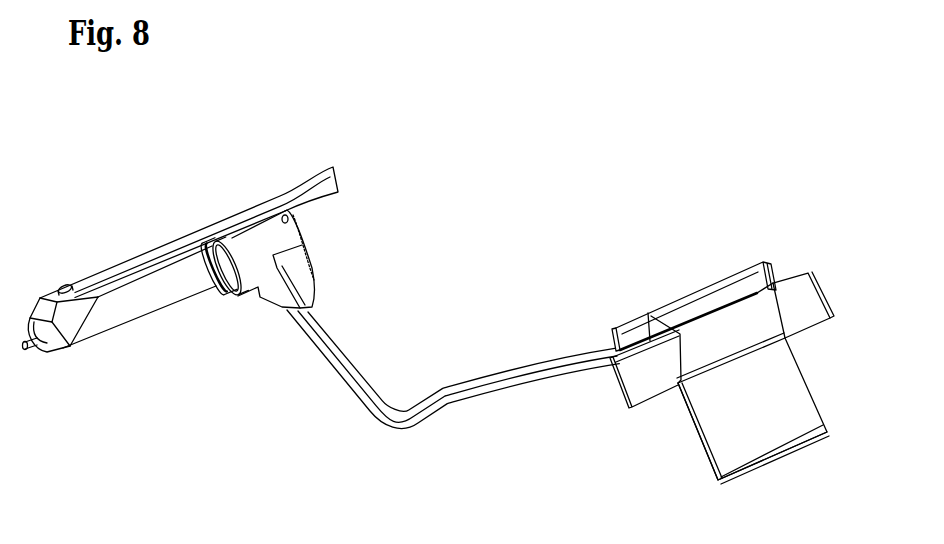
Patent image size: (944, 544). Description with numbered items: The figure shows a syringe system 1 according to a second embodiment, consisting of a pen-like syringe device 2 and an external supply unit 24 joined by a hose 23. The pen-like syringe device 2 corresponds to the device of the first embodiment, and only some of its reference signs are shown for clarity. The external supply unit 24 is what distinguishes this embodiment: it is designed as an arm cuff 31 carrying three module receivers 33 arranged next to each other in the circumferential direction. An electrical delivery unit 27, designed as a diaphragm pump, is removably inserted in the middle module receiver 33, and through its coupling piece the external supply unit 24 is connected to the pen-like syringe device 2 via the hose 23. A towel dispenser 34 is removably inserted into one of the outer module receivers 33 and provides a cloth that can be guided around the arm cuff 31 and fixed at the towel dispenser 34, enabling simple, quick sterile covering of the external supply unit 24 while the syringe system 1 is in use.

The syringe system 1 is at (635, 143).
The pen-like syringe device 2 is at (203, 184).
The hose 23 is at (345, 388).
The external supply unit 24 is at (826, 216).
The electrical delivery unit 27 is at (630, 322).
The arm cuff 31 is at (730, 452).
The module receivers 33 is at (681, 313).
The towel dispenser 34 is at (635, 372).